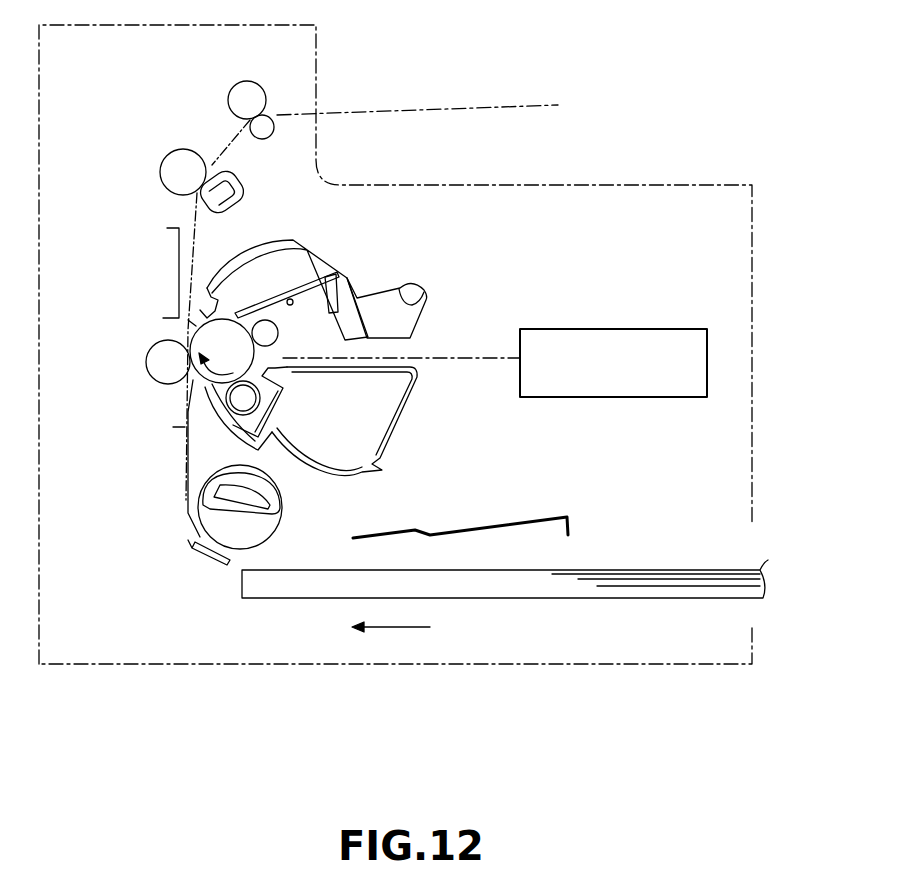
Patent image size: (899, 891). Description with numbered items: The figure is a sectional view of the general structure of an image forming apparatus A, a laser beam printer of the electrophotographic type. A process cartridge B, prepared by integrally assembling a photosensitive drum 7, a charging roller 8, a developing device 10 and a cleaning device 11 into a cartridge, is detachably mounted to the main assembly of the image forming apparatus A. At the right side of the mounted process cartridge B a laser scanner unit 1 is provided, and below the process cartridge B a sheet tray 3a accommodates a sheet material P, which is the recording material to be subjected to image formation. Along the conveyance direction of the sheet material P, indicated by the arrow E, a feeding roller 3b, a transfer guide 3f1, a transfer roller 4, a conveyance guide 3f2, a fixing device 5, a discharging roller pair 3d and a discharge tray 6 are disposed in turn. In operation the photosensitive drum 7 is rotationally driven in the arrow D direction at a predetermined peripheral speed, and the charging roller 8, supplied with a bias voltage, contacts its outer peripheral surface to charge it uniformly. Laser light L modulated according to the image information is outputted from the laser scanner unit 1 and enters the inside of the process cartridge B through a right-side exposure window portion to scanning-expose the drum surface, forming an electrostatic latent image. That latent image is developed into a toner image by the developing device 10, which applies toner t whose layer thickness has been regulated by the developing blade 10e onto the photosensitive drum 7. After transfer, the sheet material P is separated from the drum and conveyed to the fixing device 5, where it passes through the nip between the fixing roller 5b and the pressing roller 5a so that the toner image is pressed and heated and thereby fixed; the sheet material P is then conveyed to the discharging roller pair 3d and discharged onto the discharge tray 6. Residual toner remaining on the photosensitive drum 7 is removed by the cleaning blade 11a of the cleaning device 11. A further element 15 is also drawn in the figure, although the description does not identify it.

The image forming apparatus A is at (752, 410).
The laser scanner unit 1 is at (567, 350).
The sheet tray 3a is at (548, 598).
The feeding roller 3b is at (282, 512).
The discharging roller pair 3d is at (267, 92).
The transfer guide 3f1 is at (180, 480).
The conveyance guide 3f2 is at (178, 257).
The transfer roller 4 is at (143, 382).
The fixing device 5 is at (162, 144).
The pressing roller 5a is at (160, 172).
The fixing roller 5b is at (212, 166).
The discharge tray 6 is at (530, 152).
The photosensitive drum 7 is at (190, 323).
The charging roller 8 is at (300, 300).
The developing device 10 is at (336, 403).
The developing blade 10e is at (267, 360).
The cleaning device 11 is at (320, 270).
The cleaning blade 11a is at (268, 330).
The process cartridge part 15 is at (433, 303).
The process cartridge B is at (427, 292).
The laser light L is at (400, 348).
The arrow D direction D is at (222, 351).
The toner t is at (360, 421).
The sheet material P is at (630, 570).
The arrow E direction E is at (402, 628).